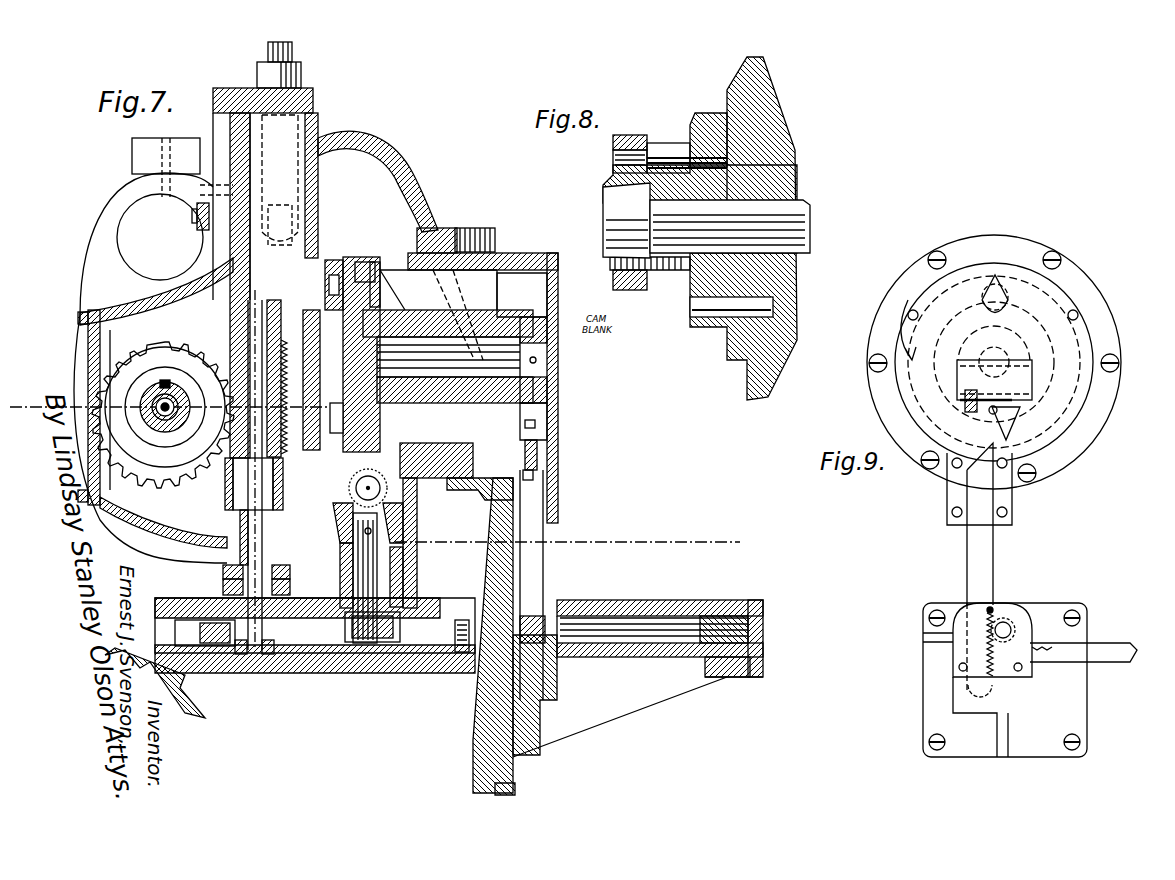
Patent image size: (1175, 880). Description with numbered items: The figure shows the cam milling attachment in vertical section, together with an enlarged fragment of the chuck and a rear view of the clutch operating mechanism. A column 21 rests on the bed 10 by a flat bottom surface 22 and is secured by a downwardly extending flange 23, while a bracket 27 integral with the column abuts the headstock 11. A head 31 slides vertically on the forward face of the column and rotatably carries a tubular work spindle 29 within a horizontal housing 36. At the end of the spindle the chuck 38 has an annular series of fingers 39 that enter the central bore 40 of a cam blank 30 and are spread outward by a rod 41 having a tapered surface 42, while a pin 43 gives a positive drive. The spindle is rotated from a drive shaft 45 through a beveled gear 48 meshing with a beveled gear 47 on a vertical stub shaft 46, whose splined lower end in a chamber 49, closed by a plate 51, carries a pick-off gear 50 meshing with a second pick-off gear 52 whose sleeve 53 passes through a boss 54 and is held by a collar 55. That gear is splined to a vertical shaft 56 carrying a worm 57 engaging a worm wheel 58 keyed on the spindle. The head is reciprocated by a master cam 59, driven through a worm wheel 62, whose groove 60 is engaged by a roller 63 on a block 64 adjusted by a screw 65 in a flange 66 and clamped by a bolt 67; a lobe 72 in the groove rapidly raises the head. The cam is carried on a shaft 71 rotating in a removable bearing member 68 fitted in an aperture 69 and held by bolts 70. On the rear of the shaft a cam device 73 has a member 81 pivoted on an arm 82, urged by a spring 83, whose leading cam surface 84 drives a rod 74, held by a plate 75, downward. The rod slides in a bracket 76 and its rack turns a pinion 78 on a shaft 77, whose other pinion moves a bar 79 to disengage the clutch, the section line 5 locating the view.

In FIG. 7, the section line 5- 5 is at (50, 398).
In FIG. 7, the bed 10 is at (473, 745).
In FIG. 7, the headstock 11 is at (130, 160).
In FIG. 7, the column 21 is at (420, 190).
In FIG. 7, the flat bottom surface 22 is at (460, 650).
In FIG. 7, the downwardly extending flange 23 is at (513, 790).
In FIG. 7, the bracket 27 is at (93, 270).
In FIG. 7, the work spindle 29 is at (160, 420).
In FIG. 8, the work spindle 29 is at (800, 187).
In FIG. 8, the cam blank 30 is at (632, 137).
In FIG. 7, the head 31 is at (233, 138).
In FIG. 7, the horizontal housing 36 is at (178, 535).
In FIG. 8, the horizontal housing 36 is at (797, 113).
In FIG. 8, the chuck 38 is at (678, 290).
In FIG. 8, the fingers 39 is at (665, 165).
In FIG. 8, the central bore 40 is at (613, 175).
In FIG. 8, the rod 41 is at (790, 220).
In FIG. 8, the tapered surface 42 is at (615, 213).
In FIG. 8, the pin 43 is at (680, 147).
In FIG. 7, the drive shaft 45 is at (430, 493).
In FIG. 7, the stub shaft 46 is at (375, 580).
In FIG. 7, the beveled gear 47 is at (372, 533).
In FIG. 7, the beveled gear 48 is at (356, 495).
In FIG. 7, the chamber 49 is at (272, 655).
In FIG. 7, the pick-off gear 50 is at (400, 642).
In FIG. 7, the plate 51 is at (243, 655).
In FIG. 7, the pick-off gear 52 is at (215, 650).
In FIG. 7, the sleeve 53 is at (223, 590).
In FIG. 7, the boss 54 is at (223, 576).
In FIG. 7, the collar 55 is at (240, 560).
In FIG. 7, the vertical shaft 56 is at (233, 498).
In FIG. 7, the worm 57 is at (228, 355).
In FIG. 7, the worm wheel 58 is at (183, 330).
In FIG. 7, the master cam 59 is at (350, 262).
In FIG. 9, the master cam 59 is at (1060, 345).
In FIG. 7, the groove 60 is at (333, 270).
In FIG. 9, the groove 60 is at (1050, 410).
In FIG. 7, the worm wheel 62 is at (370, 262).
In FIG. 7, the roller 63 is at (378, 270).
In FIG. 9, the roller 63 is at (1000, 293).
In FIG. 7, the block 64 is at (300, 240).
In FIG. 7, the adjusting screw 65 is at (295, 52).
In FIG. 7, the flange 66 is at (313, 103).
In FIG. 7, the clamping bolt 67 is at (197, 225).
In FIG. 7, the bearing member 68 is at (500, 258).
In FIG. 9, the bearing member 68 is at (1090, 430).
In FIG. 7, the aperture 69 is at (440, 230).
In FIG. 7, the bolts 70 is at (493, 232).
In FIG. 7, the shaft 71 is at (448, 365).
In FIG. 7, the lobe 72 is at (458, 315).
In FIG. 9, the lobe 72 is at (1003, 272).
In FIG. 7, the cam device 73 is at (550, 380).
In FIG. 7, the rod 74 is at (530, 558).
In FIG. 9, the rod 74 is at (977, 585).
In FIG. 7, the plate 75 is at (558, 428).
In FIG. 9, the plate 75 is at (1060, 435).
In FIG. 7, the bracket 76 is at (625, 705).
In FIG. 9, the bracket 76 is at (933, 698).
In FIG. 7, the shaft 77 is at (620, 645).
In FIG. 9, the shaft 77 is at (1027, 607).
In FIG. 7, the pinion 78 is at (560, 605).
In FIG. 7, the bar 79 is at (730, 680).
In FIG. 9, the bar 79 is at (1112, 660).
In FIG. 7, the member 81 is at (545, 455).
In FIG. 9, the member 81 is at (935, 470).
In FIG. 7, the arm 82 is at (547, 403).
In FIG. 9, the arm 82 is at (1032, 385).
In FIG. 9, the spring 83 is at (962, 402).
In FIG. 9, the leading cam surface 84 is at (1015, 430).